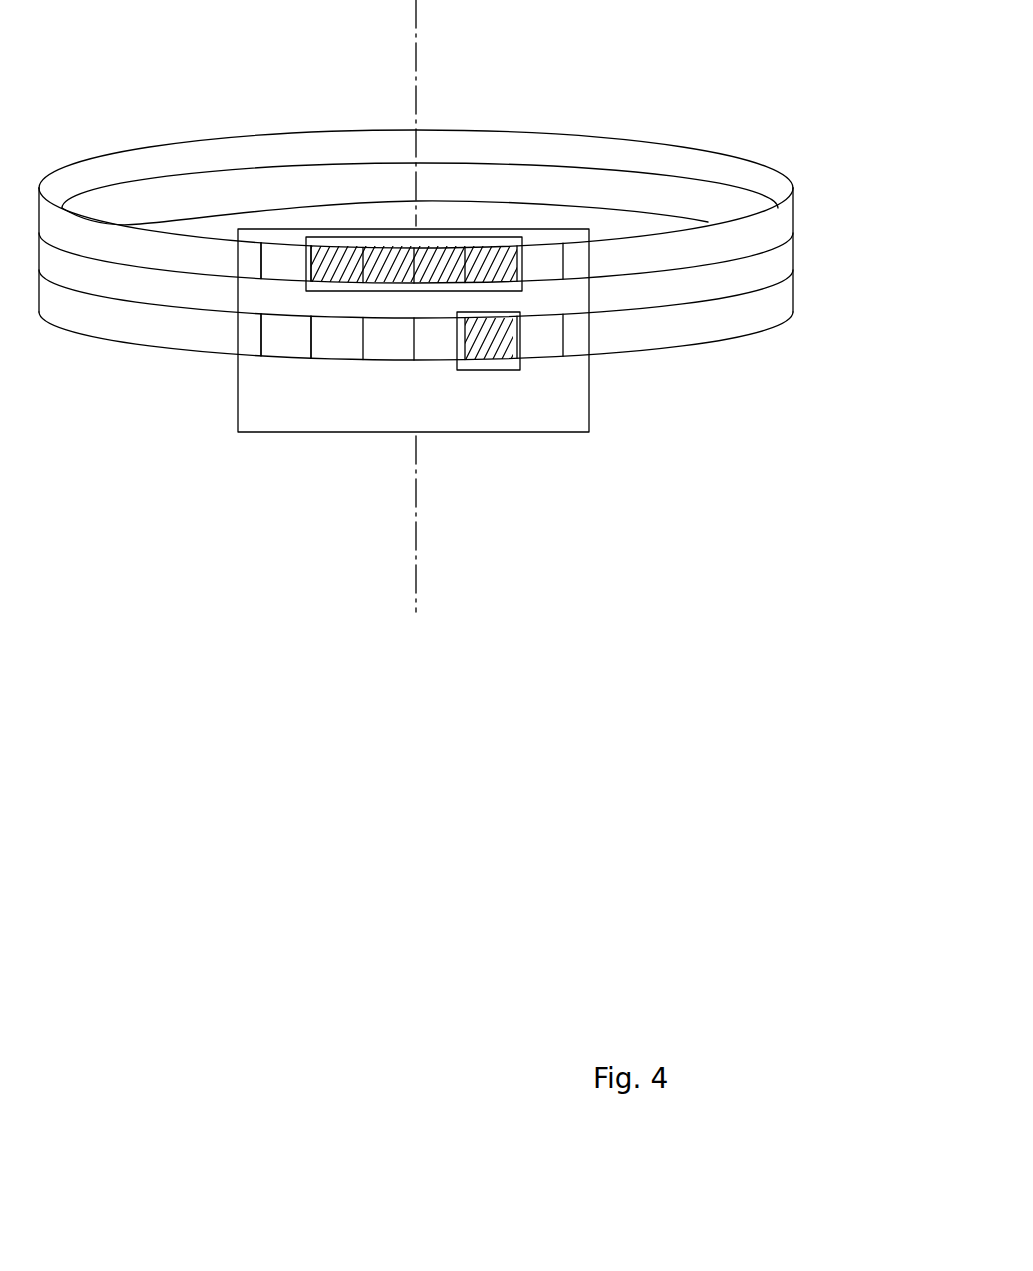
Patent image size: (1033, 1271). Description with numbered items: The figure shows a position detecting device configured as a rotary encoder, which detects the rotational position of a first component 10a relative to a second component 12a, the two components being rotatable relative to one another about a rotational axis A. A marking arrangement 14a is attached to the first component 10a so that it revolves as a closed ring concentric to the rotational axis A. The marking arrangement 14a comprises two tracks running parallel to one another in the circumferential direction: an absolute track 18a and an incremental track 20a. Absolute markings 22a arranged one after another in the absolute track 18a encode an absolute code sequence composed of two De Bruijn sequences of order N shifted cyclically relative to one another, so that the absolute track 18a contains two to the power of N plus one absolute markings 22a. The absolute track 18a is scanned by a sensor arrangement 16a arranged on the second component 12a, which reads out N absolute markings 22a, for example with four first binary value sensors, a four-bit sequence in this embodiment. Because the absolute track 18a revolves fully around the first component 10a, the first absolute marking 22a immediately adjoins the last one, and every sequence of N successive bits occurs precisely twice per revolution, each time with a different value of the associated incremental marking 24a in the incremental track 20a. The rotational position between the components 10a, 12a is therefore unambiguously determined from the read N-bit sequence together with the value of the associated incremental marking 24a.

The rotational axis A is at (416, 20).
The first component 10a is at (793, 248).
The second component 12a is at (589, 432).
The marking arrangement 14a is at (546, 340).
The sensor arrangement 16a is at (522, 292).
The absolute track 18a is at (656, 255).
The incremental track 20a is at (654, 330).
The absolute markings 22a is at (283, 255).
The incremental markings 24a is at (276, 338).